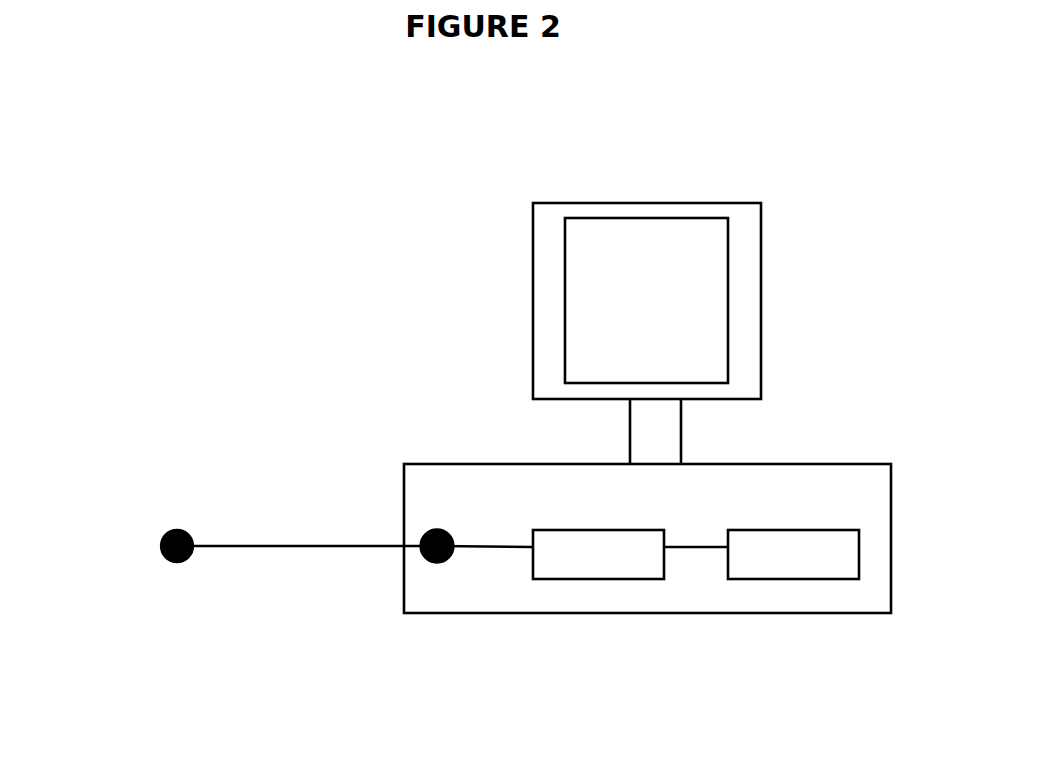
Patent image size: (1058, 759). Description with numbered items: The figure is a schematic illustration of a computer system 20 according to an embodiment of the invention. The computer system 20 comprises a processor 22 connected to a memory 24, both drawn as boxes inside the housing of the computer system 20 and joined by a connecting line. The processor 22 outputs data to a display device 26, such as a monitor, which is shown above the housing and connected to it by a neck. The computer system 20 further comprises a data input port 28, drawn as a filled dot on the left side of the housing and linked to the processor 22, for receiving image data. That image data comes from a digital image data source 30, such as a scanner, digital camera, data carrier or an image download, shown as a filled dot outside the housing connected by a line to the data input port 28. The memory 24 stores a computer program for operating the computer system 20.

The computer system 20 is at (832, 231).
The processor 22 is at (613, 579).
The memory 24 is at (797, 579).
The display device 26 is at (532, 350).
The data input port 28 is at (446, 560).
The digital image data source 30 is at (177, 530).